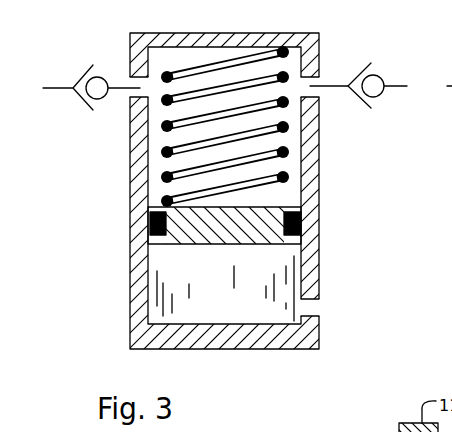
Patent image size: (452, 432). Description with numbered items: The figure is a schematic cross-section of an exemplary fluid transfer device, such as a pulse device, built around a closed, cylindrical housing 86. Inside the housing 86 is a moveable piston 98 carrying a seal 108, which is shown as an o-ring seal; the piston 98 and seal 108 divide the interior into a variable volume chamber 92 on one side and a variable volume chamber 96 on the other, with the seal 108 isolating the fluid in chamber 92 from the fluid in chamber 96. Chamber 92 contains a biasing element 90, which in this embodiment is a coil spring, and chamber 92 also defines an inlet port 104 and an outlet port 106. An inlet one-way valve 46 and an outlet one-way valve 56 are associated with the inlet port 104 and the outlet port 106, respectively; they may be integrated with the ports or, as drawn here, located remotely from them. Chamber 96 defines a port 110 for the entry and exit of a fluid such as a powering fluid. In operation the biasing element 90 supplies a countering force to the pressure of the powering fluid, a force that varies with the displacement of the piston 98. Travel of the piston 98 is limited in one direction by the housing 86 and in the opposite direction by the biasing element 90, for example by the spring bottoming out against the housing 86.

The housing 86 is at (311, 167).
The variable volume chamber 92 is at (168, 57).
The inlet port 104 is at (133, 80).
The outlet port 106 is at (314, 86).
The port 110 is at (309, 306).
The inlet one-way valve 46 is at (78, 97).
The outlet one-way valve 56 is at (376, 100).
The biasing element 90 is at (163, 105).
The piston 98 is at (175, 244).
The seal 108 is at (150, 223).
The variable volume chamber 96 is at (286, 293).